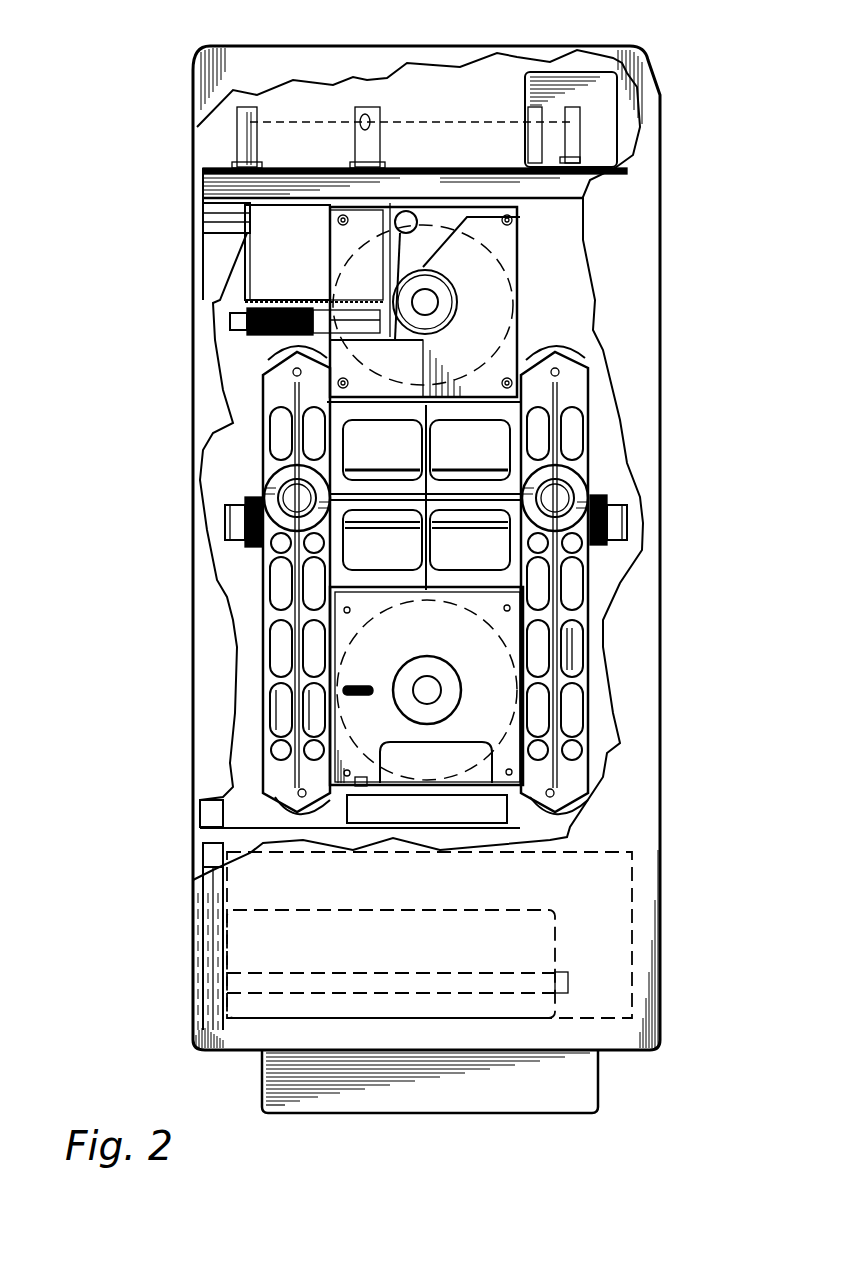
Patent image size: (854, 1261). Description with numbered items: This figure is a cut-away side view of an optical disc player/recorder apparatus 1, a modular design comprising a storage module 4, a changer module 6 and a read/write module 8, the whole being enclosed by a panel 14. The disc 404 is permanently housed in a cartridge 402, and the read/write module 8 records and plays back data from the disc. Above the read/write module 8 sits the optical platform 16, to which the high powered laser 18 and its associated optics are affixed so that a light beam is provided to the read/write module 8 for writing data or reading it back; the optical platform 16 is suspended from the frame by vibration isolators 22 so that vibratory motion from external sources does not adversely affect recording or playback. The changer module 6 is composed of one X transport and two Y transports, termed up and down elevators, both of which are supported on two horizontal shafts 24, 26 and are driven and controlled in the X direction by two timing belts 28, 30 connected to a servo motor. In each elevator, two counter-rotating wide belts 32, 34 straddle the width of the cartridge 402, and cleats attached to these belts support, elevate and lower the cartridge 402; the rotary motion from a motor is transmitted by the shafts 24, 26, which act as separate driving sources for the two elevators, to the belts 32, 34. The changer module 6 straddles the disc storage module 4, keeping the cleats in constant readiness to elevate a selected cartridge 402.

The optical disc player/recorder apparatus 1 is at (721, 697).
The storage module 4 is at (532, 701).
The changer module 6 is at (230, 580).
The read/write module 8 is at (510, 257).
The panel 14 is at (277, 947).
The optical platform 16 is at (440, 180).
The laser 18 is at (603, 88).
The vibration isolators 22 is at (203, 205).
The horizontal shaft 24 is at (294, 492).
The horizontal shaft 26 is at (558, 492).
The timing belt 28 is at (240, 548).
The timing belt 30 is at (615, 500).
The wide belt 32 is at (282, 700).
The wide belt 34 is at (575, 648).
The cartridge 402 is at (515, 765).
The disc 404 is at (507, 703).